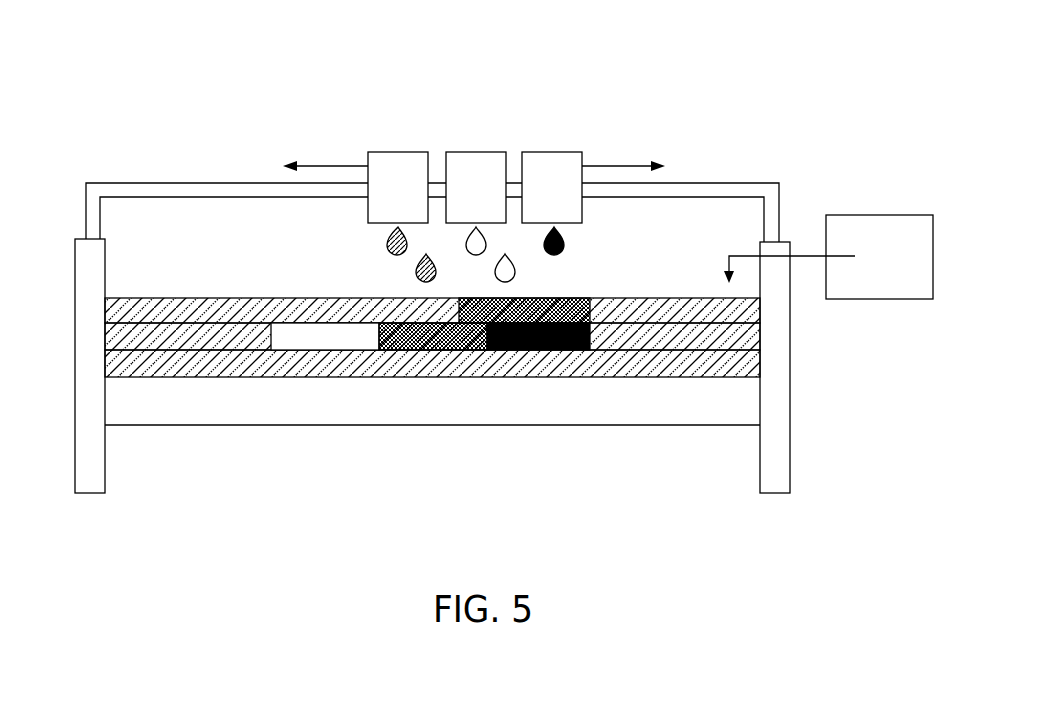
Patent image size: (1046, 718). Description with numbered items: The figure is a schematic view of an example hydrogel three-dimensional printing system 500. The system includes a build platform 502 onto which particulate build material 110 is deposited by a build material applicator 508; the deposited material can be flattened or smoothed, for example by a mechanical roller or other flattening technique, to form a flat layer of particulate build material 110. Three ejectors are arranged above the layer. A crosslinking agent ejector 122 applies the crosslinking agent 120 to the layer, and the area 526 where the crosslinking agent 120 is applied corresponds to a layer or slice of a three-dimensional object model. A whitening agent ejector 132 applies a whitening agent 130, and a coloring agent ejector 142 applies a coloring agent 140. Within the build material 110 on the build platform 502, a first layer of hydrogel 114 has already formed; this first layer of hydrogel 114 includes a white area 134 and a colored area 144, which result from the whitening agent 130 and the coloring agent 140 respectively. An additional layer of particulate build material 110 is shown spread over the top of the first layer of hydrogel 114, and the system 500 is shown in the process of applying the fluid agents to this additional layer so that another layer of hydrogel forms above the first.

The hydrogel three-dimensional printing system 500 is at (175, 71).
The particulate build material 110 is at (173, 333).
The crosslinking agent 120 is at (389, 246).
The whitening agent 130 is at (509, 272).
The coloring agent 140 is at (562, 245).
The crosslinking agent ejector 122 is at (377, 197).
The whitening agent ejector 132 is at (455, 197).
The coloring agent ejector 142 is at (531, 197).
The white area 134 is at (324, 340).
The first layer of hydrogel 114 is at (395, 337).
The area where the crosslinking agent is applied 526 is at (476, 345).
The colored area 144 is at (558, 350).
The build platform 502 is at (654, 410).
The build material applicator 508 is at (900, 268).